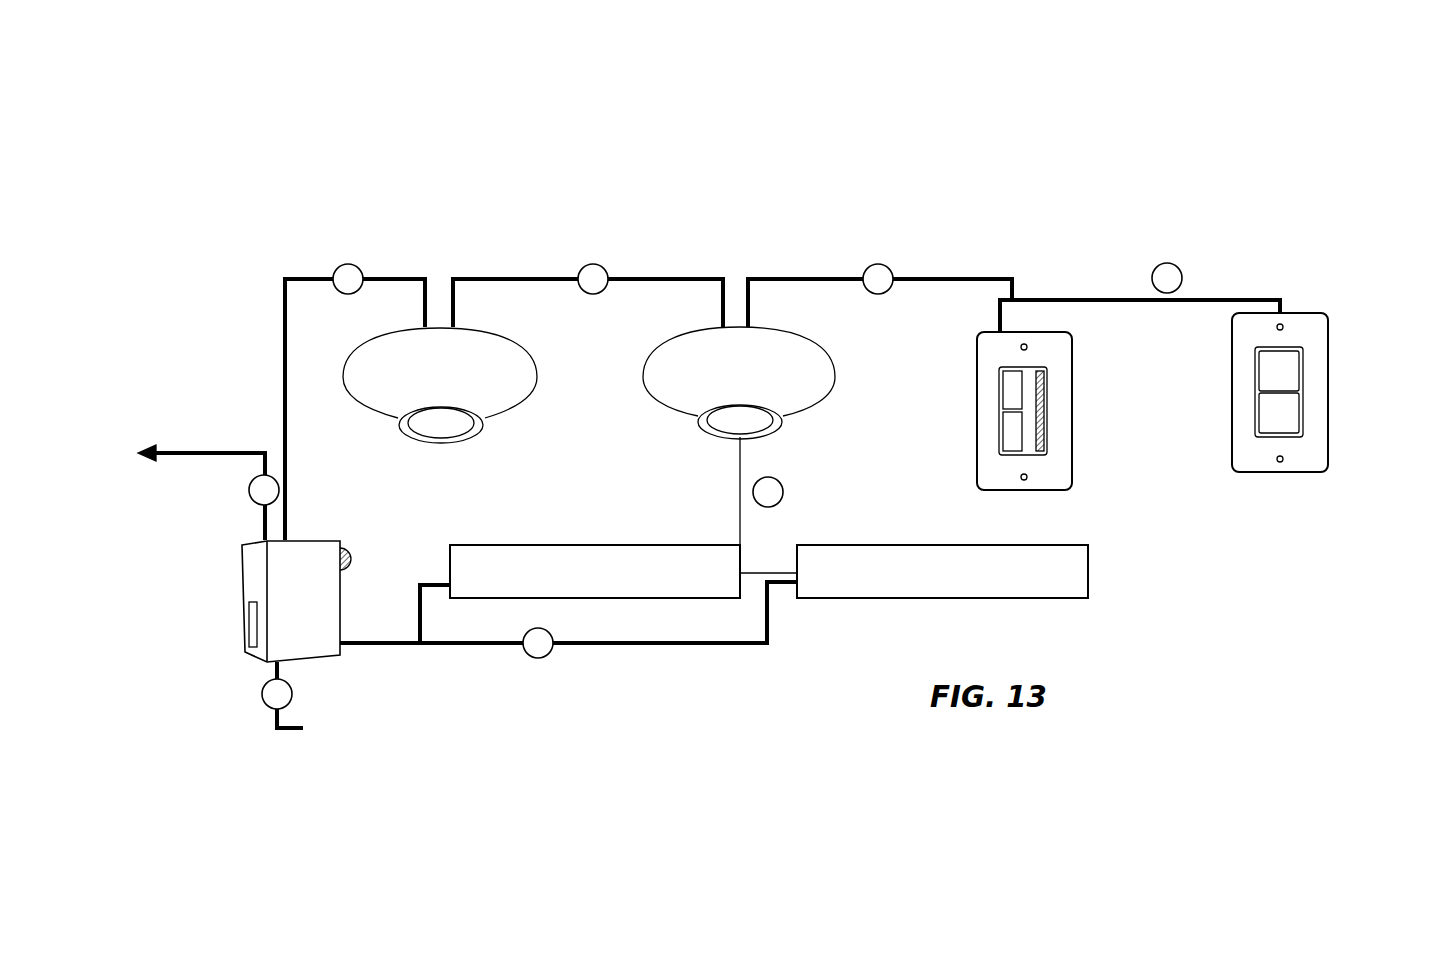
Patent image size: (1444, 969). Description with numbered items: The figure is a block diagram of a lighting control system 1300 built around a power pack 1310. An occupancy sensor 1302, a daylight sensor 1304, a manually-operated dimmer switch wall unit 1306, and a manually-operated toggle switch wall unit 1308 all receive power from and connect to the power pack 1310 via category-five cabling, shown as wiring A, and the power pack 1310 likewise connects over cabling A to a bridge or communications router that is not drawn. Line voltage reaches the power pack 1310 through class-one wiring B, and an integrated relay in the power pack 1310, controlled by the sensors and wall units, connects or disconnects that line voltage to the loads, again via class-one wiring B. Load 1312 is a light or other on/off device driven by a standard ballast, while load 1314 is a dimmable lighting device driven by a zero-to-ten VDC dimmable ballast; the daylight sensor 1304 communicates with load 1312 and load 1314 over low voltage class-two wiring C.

The lighting control system 1300 is at (800, 100).
The occupancy sensor 1302 is at (505, 342).
The daylight sensor 1304 is at (822, 348).
The manually-operated dimmer switch wall unit 1306 is at (1073, 349).
The manually-operated toggle switch wall unit 1308 is at (1328, 351).
The power pack 1310 is at (323, 537).
The load 1312 is at (545, 545).
The load 1314 is at (1073, 545).